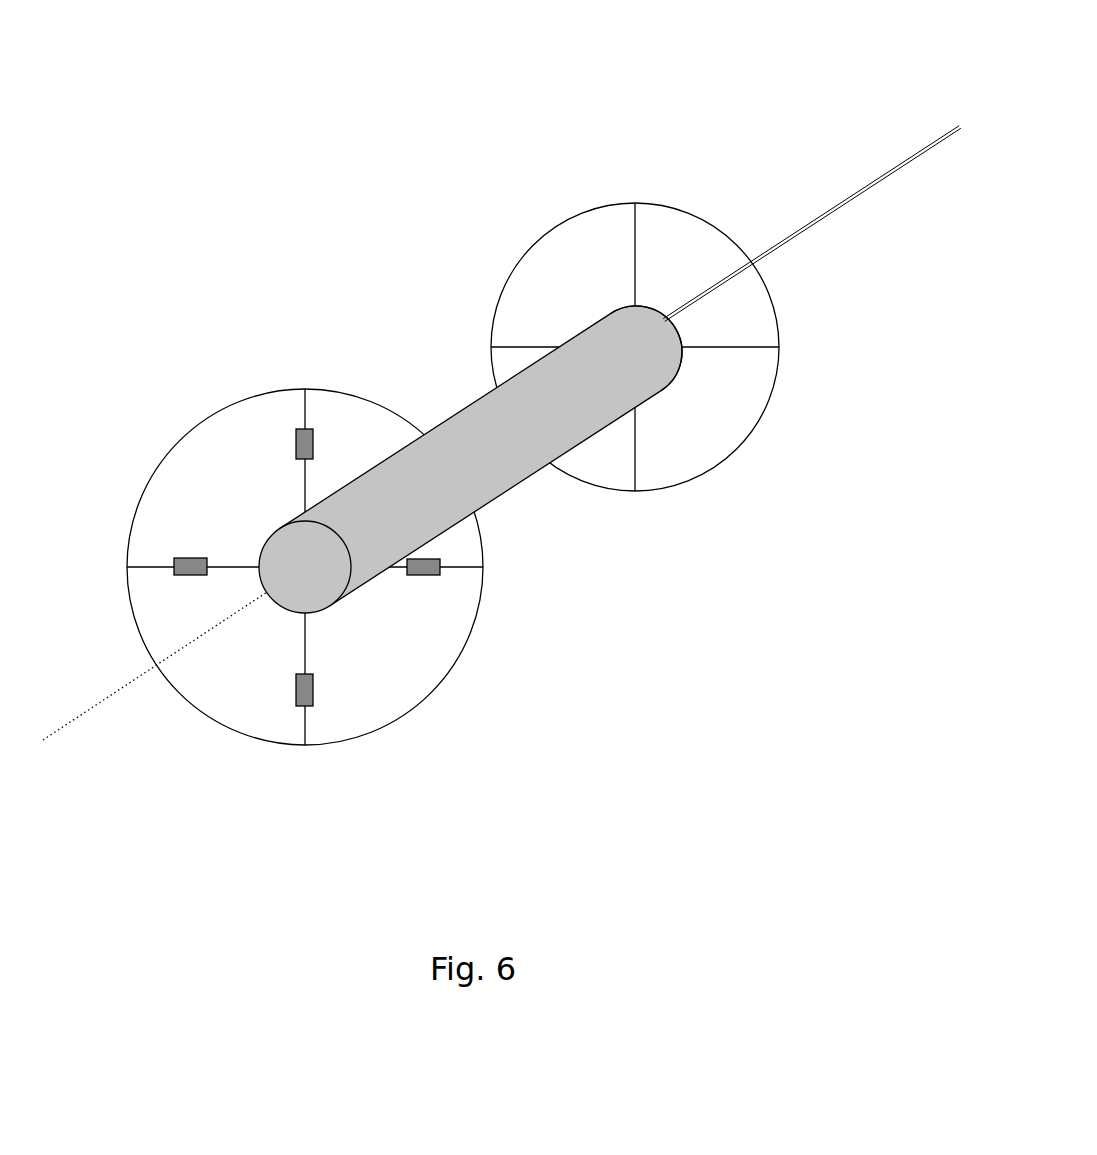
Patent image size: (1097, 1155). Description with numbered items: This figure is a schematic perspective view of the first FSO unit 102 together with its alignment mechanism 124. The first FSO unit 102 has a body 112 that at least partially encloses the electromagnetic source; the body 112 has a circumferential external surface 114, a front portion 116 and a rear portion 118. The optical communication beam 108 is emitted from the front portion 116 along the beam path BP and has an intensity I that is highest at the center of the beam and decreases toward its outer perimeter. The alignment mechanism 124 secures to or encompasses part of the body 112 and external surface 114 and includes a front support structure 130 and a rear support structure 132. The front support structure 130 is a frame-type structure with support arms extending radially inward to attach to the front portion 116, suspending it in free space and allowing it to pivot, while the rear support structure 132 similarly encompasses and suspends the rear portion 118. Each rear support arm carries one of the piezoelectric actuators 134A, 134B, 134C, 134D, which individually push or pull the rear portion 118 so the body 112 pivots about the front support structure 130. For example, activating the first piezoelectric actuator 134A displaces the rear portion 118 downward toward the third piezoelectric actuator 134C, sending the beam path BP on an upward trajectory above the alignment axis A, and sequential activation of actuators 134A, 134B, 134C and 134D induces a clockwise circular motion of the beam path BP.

The alignment mechanism 124 is at (373, 100).
The front support structure 130 is at (632, 202).
The rear support structure 132 is at (170, 447).
The first piezoelectric actuator 134A is at (297, 440).
The second piezoelectric actuator 134B is at (422, 575).
The third piezoelectric actuator 134C is at (315, 688).
The fourth piezoelectric actuator 134D is at (182, 577).
The external surface 114 is at (445, 427).
The first FSO unit 102 is at (520, 480).
The body 112 is at (481, 456).
The front portion 116 is at (680, 374).
The rear portion 118 is at (352, 604).
The optical communication beam 108 is at (838, 207).
The beam path BP is at (812, 224).
The intensity I is at (812, 224).
The alignment axis A is at (88, 712).